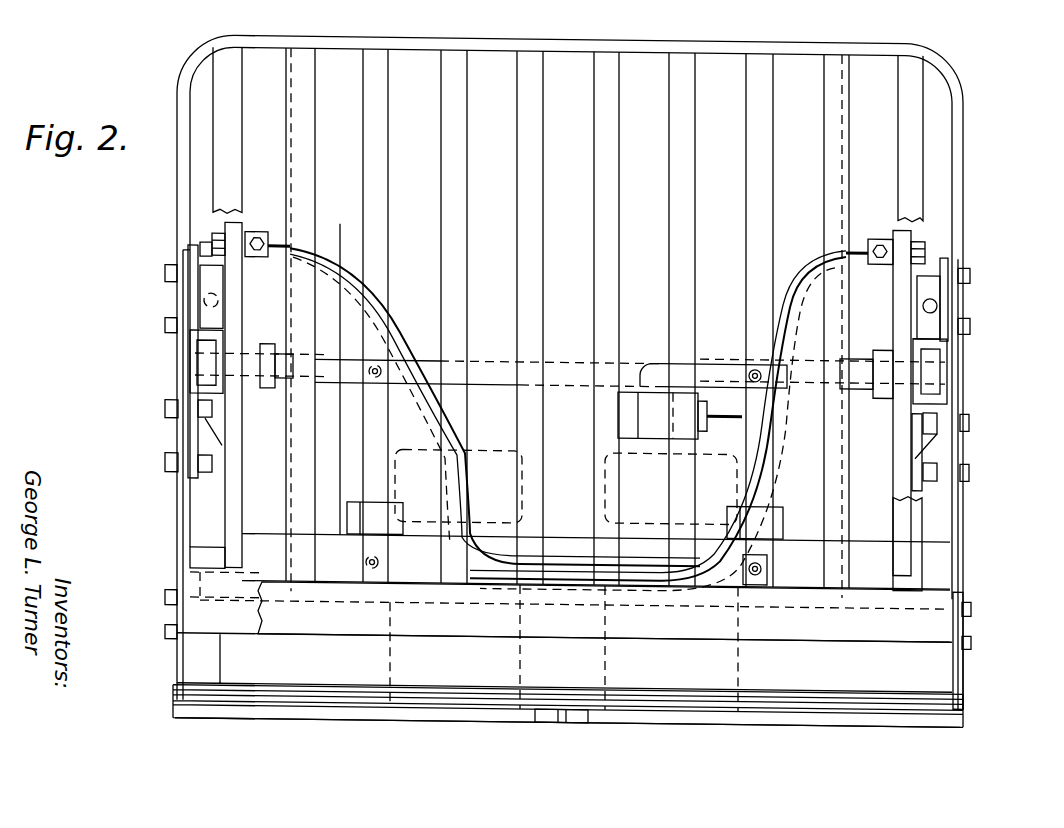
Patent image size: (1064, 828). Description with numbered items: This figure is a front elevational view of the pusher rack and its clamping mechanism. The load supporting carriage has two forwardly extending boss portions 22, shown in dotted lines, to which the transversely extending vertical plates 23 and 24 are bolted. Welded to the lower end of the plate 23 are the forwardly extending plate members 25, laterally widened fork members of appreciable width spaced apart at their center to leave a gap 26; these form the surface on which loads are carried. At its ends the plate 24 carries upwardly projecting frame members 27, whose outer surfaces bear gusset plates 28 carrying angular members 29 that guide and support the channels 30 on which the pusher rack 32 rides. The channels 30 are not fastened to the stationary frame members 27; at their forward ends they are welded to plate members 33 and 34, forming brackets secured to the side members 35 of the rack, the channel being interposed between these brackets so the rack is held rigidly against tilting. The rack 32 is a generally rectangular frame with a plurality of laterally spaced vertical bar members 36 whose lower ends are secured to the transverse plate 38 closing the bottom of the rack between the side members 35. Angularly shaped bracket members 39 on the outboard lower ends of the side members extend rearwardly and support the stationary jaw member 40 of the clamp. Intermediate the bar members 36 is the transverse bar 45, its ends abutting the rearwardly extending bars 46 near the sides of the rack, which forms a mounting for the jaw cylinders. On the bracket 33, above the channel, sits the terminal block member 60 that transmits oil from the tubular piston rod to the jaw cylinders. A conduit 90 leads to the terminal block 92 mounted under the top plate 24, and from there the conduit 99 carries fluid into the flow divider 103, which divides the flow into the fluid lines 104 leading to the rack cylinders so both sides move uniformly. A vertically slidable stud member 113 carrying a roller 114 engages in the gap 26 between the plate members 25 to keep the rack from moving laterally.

The boss portions 22 is at (392, 675).
The plate 23 is at (540, 618).
The plate 24 is at (333, 445).
The plate members 25 is at (255, 720).
The gap 26 is at (540, 720).
The frame members 27 is at (233, 418).
The gusset plates 28 is at (198, 440).
The angular members 29 is at (178, 370).
The channels 30 is at (190, 345).
The pusher rack 32 is at (980, 160).
The plate member 33 is at (188, 275).
The plate member 34 is at (190, 475).
The side members 35 is at (182, 210).
The bar members 36 is at (615, 140).
The transverse plate 38 is at (305, 634).
The bracket members 39 is at (165, 610).
The jaw member 40 is at (175, 700).
The transverse bar 45 is at (560, 360).
The rearwardly extending bars 46 is at (291, 125).
The terminal block member 60 is at (203, 300).
The conduit 90 is at (512, 405).
The terminal block 92 is at (600, 595).
The conduit 99 is at (752, 582).
The flow divider 103 is at (645, 385).
The fluid lines 104 is at (485, 395).
The stud member 113 is at (562, 720).
The roller 114 is at (580, 720).